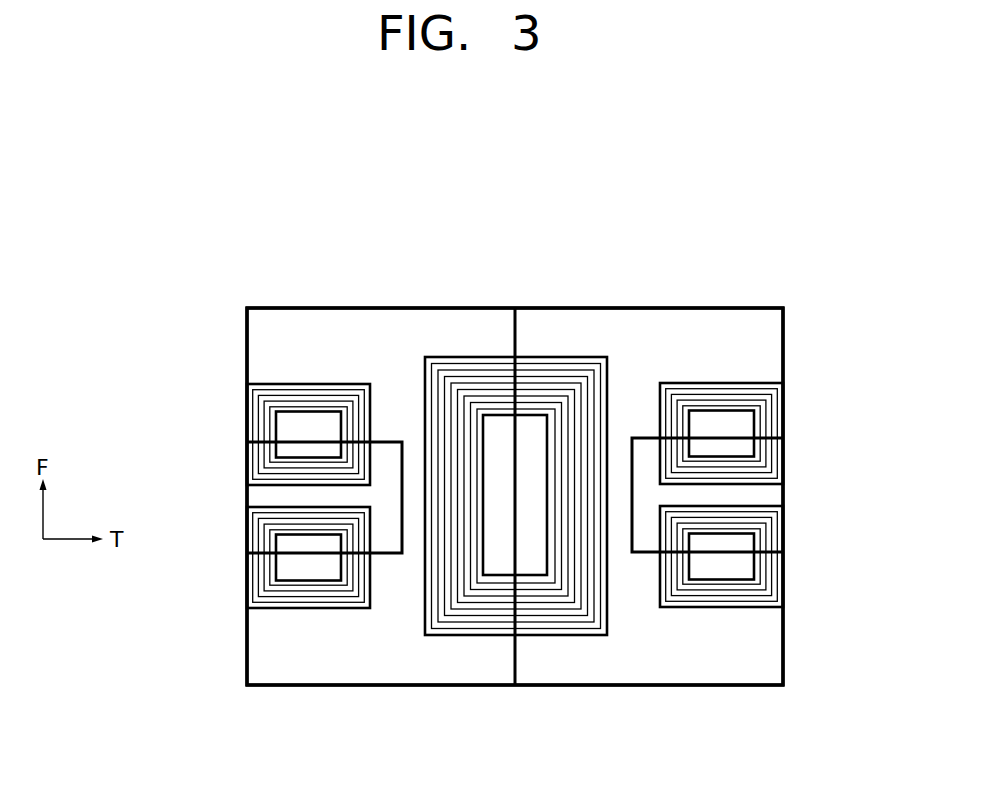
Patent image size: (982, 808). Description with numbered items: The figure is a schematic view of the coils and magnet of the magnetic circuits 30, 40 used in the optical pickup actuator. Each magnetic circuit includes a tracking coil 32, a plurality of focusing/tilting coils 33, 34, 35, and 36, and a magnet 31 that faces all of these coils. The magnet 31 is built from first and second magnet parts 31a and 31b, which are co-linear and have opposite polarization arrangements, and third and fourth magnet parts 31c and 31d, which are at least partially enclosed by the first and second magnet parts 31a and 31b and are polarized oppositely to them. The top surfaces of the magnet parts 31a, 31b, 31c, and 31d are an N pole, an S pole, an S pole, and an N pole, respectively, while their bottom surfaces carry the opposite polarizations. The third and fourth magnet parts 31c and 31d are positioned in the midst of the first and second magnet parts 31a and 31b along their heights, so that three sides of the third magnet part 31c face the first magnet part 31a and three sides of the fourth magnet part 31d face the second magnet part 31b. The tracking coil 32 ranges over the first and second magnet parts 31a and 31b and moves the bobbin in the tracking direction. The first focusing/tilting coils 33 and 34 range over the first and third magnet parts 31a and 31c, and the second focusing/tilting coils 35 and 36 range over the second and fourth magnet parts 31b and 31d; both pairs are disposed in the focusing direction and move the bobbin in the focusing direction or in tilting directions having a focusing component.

The magnetic circuit 30 is at (416, 266).
The magnetic circuit 40 is at (515, 430).
The magnet 31 is at (542, 307).
The first magnet part 31a is at (692, 328).
The second magnet part 31b is at (332, 332).
The third magnet part 31c is at (773, 492).
The fourth magnet part 31d is at (260, 493).
The tracking coil 32 is at (530, 618).
The first focusing/tilting coil 33 is at (777, 412).
The first focusing/tilting coil 34 is at (773, 595).
The second focusing/tilting coil 35 is at (252, 398).
The second focusing/tilting coil 36 is at (260, 590).